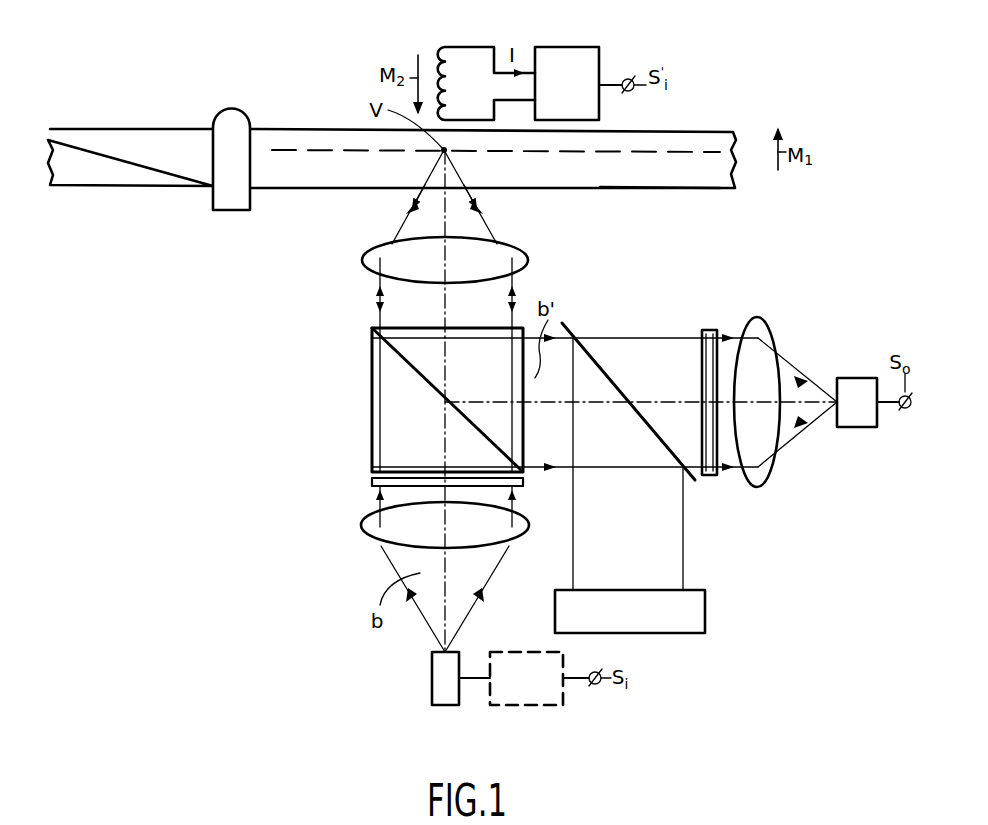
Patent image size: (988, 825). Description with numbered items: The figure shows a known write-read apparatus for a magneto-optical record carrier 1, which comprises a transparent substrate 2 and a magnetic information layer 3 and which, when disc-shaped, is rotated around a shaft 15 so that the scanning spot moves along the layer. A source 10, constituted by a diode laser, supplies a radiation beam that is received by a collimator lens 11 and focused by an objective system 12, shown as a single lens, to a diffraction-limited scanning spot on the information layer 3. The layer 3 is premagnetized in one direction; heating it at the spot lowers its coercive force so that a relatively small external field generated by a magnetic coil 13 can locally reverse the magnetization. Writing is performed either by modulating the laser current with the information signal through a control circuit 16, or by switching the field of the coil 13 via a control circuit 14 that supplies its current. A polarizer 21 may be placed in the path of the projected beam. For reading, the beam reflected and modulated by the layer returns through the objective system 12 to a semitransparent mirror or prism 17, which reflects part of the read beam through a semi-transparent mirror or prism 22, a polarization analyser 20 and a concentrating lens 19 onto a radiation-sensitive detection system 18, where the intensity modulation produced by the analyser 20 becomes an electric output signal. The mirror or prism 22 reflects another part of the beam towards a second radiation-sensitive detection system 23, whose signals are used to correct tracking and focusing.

The magneto-optical record carrier 1 is at (692, 131).
The transparent substrate 2 is at (700, 176).
The magnetic information layer 3 is at (706, 152).
The source 10 is at (446, 708).
The collimator lens 11 is at (362, 525).
The objective system 12 is at (362, 259).
The magnetic coil 13 is at (453, 47).
The control circuit 14 is at (575, 60).
The shaft 15 is at (235, 191).
The control circuit 16 is at (541, 695).
The semitransparent mirror or prism 17 is at (400, 399).
The radiation-sensitive detection system 18 is at (866, 380).
The lens 19 is at (765, 330).
The polarization analyser 20 is at (712, 330).
The polarizer 21 is at (372, 482).
The semi-transparent mirror or prism 22 is at (593, 358).
The second radiation-sensitive detection system 23 is at (700, 615).